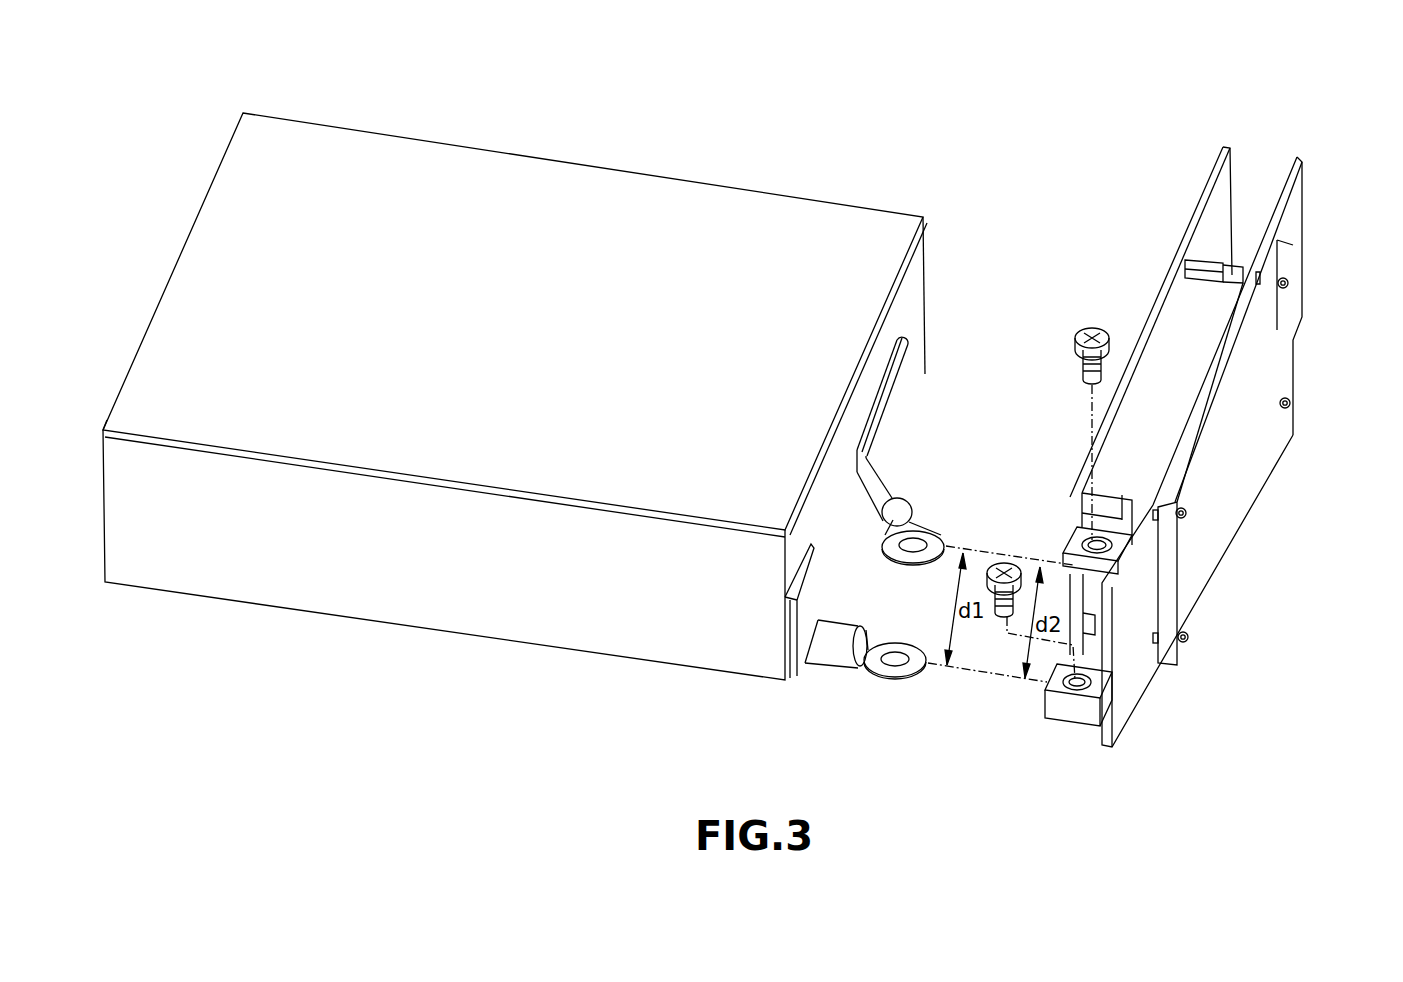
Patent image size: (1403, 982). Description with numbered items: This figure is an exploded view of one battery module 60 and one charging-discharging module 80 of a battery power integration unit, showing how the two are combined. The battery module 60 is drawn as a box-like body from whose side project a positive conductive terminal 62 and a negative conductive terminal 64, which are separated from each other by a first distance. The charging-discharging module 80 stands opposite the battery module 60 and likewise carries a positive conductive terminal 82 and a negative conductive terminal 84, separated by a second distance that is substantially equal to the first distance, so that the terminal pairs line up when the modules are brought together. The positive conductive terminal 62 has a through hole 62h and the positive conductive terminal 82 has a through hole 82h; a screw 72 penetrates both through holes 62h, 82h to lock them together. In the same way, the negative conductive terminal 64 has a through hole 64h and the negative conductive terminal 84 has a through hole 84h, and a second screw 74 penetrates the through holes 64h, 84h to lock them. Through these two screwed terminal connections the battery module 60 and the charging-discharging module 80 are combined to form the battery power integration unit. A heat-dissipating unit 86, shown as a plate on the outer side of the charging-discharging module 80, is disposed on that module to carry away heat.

The battery module 60 is at (563, 152).
The positive conductive terminal 62 is at (921, 451).
The through hole 62h is at (916, 540).
The negative conductive terminal 64 is at (865, 655).
The through hole 64h is at (875, 666).
The screw 72 is at (1092, 328).
The screw 74 is at (1005, 562).
The charging-discharging module 80 is at (1177, 425).
The positive conductive terminal 82 is at (1078, 505).
The through hole 82h is at (1076, 528).
The negative conductive terminal 84 is at (1038, 719).
The through hole 84h is at (1068, 684).
The heat-dissipating unit 86 is at (1233, 490).